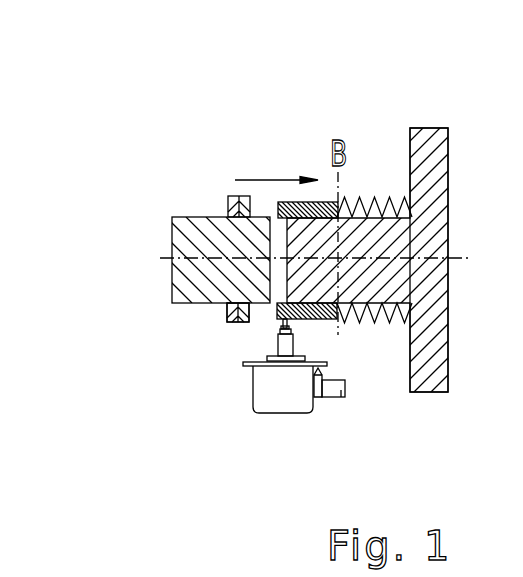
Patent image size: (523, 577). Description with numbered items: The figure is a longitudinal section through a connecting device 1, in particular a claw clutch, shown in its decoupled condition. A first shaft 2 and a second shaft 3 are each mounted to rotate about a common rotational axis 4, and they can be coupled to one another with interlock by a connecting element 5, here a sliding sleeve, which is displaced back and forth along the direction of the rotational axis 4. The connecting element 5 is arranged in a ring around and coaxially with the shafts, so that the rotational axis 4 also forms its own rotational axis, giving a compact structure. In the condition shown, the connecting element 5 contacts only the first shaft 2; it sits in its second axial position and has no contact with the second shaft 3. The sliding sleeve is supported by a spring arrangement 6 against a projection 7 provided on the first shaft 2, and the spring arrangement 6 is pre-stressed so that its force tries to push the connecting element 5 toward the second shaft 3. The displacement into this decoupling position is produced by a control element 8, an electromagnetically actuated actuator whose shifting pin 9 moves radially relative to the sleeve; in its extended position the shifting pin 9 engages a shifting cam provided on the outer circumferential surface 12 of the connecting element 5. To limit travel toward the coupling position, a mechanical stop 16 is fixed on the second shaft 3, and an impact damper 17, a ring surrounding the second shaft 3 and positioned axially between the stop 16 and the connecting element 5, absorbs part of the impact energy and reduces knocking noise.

The connecting device 1 is at (366, 114).
The first shaft 2 is at (381, 243).
The second shaft 3 is at (207, 237).
The rotational axis 4 is at (467, 258).
The connecting element 5 is at (291, 202).
The spring arrangement 6 is at (378, 325).
The projection 7 is at (410, 157).
The control element 8 is at (239, 432).
The shifting pin 9 is at (283, 323).
The outer circumferential surface 12 is at (320, 320).
The mechanical stop 16 is at (203, 320).
The impact damper 17 is at (243, 323).